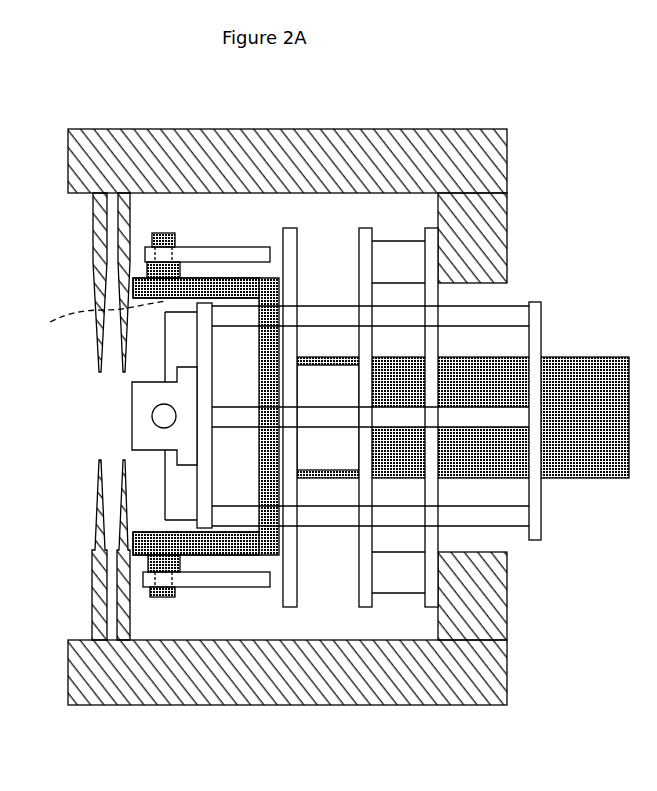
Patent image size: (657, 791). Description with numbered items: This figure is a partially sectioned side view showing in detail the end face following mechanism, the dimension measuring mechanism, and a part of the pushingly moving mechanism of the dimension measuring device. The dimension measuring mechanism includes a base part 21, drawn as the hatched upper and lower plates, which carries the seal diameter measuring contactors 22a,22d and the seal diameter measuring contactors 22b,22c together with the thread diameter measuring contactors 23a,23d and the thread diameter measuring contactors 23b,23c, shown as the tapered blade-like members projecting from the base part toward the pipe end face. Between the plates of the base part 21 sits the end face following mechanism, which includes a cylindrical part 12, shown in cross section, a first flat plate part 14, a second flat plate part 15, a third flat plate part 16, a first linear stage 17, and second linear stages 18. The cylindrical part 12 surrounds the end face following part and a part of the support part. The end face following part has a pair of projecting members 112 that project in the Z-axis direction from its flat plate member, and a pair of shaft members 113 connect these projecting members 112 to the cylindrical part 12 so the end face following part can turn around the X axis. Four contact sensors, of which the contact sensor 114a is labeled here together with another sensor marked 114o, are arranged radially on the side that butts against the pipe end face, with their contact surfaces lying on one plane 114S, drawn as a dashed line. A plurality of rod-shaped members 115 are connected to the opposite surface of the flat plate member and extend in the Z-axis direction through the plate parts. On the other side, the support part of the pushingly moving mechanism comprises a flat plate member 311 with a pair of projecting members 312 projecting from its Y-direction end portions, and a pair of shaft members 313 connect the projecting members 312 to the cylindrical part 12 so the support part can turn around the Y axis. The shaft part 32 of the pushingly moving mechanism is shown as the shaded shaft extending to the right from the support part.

The base part 21 is at (480, 165).
The third flat plate part 16 is at (445, 262).
The shaft part 32 is at (585, 462).
The first linear stage 17 is at (325, 385).
The flat plate member 311 is at (265, 287).
The projecting members 312 is at (190, 287).
The shaft members 313 is at (157, 233).
The first flat plate part 14 is at (291, 235).
The second flat plate part 15 is at (367, 240).
The second linear stages 18 is at (400, 258).
The rod-shaped members 115 is at (503, 318).
The projecting members 112 is at (180, 432).
The shaft members 113 is at (152, 416).
The contact sensor 114a is at (178, 345).
The bracket 114o is at (178, 497).
The plane 114S is at (90, 317).
The cylindrical part 12 is at (227, 253).
The thread diameter measuring contactors 23a,23d is at (100, 195).
The seal diameter measuring contactors 22a,22d is at (125, 195).
The thread diameter measuring contactors 23b,23c is at (97, 648).
The seal diameter measuring contactors 22b,22c is at (125, 648).